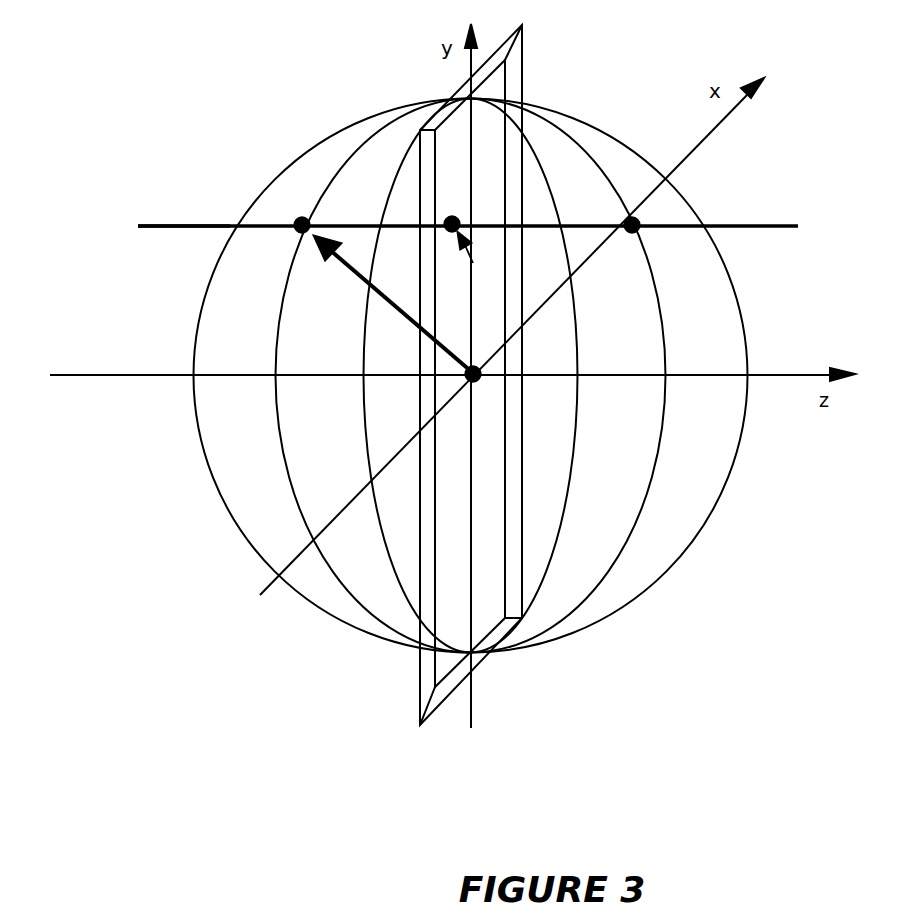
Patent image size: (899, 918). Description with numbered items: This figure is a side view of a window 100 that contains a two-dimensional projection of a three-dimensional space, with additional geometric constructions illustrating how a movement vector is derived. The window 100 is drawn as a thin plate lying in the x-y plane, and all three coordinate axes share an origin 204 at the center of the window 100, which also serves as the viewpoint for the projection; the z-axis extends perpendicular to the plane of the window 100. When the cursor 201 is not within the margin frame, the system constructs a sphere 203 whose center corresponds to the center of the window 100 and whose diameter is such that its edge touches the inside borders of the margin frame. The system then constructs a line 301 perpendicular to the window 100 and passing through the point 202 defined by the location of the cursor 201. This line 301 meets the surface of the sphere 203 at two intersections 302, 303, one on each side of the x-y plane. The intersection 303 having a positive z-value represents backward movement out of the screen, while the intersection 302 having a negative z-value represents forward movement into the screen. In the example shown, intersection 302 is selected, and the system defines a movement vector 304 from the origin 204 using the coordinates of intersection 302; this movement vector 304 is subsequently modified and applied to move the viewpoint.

The window 100 is at (415, 695).
The cursor 201 is at (473, 262).
The point 202 is at (459, 213).
The sphere 203 is at (693, 210).
The origin 204 is at (463, 395).
The line 301 is at (158, 230).
The intersection 302 is at (290, 240).
The intersection 303 is at (637, 230).
The movement vector 304 is at (400, 318).